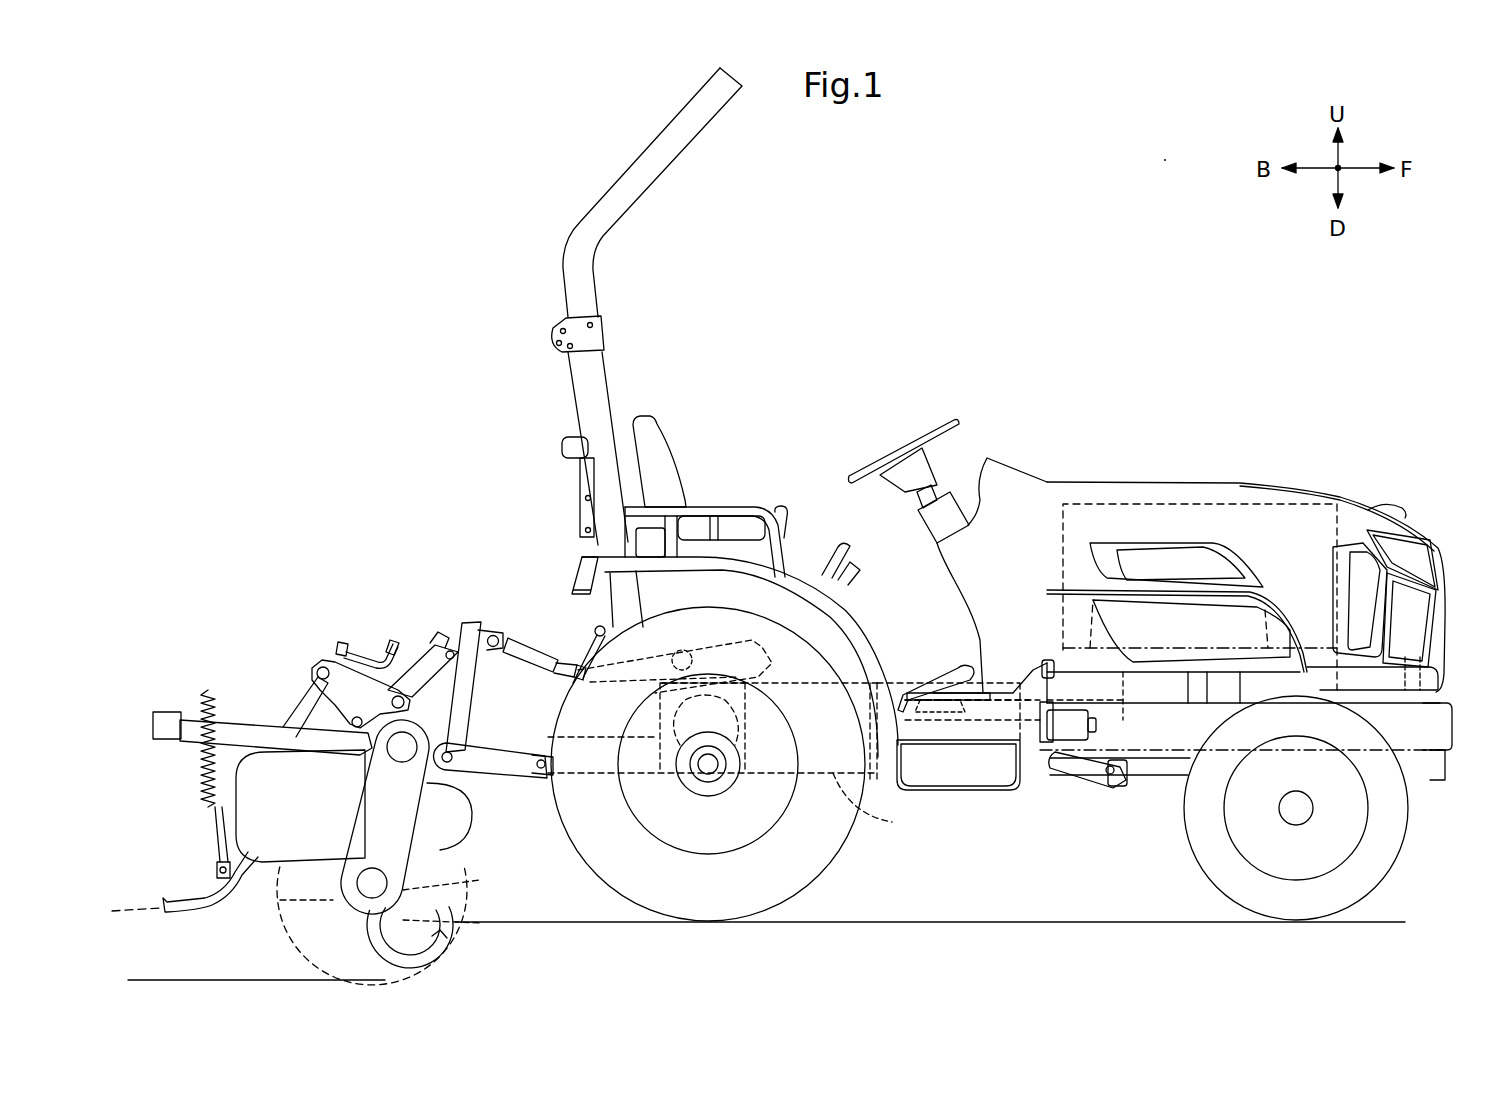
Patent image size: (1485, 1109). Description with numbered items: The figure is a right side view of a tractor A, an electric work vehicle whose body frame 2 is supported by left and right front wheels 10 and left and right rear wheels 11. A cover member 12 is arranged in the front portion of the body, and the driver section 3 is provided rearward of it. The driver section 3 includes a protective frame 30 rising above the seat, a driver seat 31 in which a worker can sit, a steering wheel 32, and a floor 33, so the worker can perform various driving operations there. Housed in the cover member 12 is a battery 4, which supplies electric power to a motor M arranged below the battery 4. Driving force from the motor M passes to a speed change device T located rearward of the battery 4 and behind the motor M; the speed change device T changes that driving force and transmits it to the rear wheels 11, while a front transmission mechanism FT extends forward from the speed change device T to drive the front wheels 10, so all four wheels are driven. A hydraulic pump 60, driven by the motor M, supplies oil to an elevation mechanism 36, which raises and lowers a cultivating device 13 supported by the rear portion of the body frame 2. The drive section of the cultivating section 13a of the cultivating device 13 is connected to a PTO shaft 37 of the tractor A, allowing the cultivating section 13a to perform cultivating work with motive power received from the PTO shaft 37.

The tractor A is at (322, 210).
The driver section 3 is at (826, 337).
The body frame 2 is at (1425, 745).
The cover member 12 is at (1140, 482).
The battery 4 is at (1240, 505).
The motor M is at (1125, 695).
The steering wheel 32 is at (930, 425).
The driver seat 31 is at (655, 440).
The protective frame 30 is at (660, 140).
The rear wheels 11 is at (815, 865).
The speed change device T is at (833, 773).
The floor 33 is at (945, 705).
The hydraulic pump 60 is at (1055, 745).
The front transmission mechanism FT is at (1090, 780).
The front wheels 10 is at (1200, 870).
The cultivating device 13 is at (335, 622).
The PTO shaft 37 is at (520, 740).
The elevation mechanism 36 is at (528, 626).
The cultivating section 13a is at (420, 890).